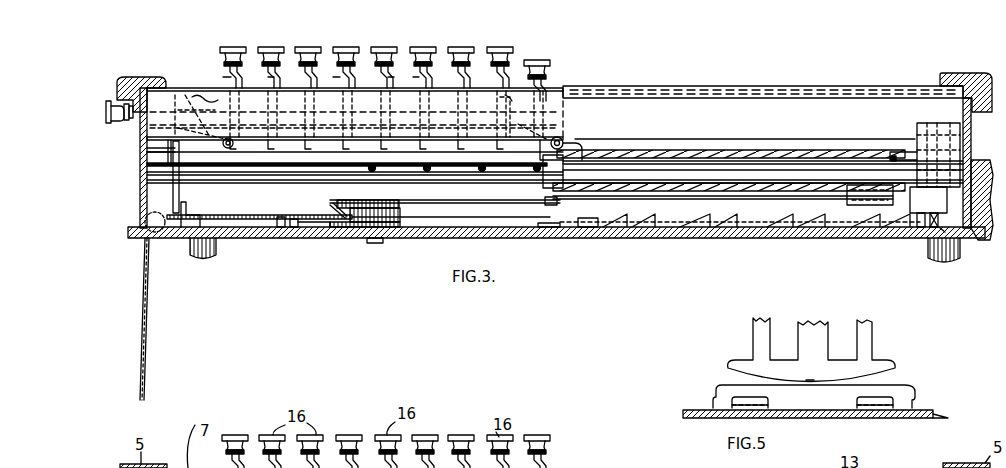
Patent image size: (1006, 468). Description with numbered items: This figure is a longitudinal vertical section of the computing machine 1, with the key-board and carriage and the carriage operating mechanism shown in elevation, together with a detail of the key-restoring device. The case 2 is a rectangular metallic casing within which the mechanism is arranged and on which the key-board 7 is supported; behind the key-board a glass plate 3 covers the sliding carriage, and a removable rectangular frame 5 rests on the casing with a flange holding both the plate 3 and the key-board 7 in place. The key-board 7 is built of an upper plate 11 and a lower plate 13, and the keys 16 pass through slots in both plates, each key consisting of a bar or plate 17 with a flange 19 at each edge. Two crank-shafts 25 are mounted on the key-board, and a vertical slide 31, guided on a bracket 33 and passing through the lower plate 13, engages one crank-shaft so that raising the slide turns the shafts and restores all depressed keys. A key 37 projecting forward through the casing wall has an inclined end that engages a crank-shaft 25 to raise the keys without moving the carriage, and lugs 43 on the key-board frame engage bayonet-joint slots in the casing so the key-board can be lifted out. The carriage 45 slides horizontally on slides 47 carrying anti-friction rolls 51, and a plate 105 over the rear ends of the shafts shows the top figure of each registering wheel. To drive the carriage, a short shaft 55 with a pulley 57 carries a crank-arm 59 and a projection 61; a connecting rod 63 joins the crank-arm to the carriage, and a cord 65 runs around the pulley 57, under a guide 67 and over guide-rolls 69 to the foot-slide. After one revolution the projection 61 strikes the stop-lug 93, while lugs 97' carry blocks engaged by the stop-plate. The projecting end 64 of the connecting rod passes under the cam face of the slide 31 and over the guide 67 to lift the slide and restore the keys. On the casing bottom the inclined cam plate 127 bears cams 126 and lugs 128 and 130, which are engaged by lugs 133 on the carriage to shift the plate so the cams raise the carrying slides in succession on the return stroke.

In FIG. 3, the machine 1 is at (990, 190).
In FIG. 5, the case 2 is at (843, 412).
In FIG. 3, the glass plate 3 is at (748, 90).
In FIG. 3, the removable rectangular frame 5 is at (131, 76).
In FIG. 3, the key-board 7 is at (193, 88).
In FIG. 3, the upper plate 11 is at (517, 98).
In FIG. 3, the lower plate 13 is at (403, 140).
In FIG. 3, the keys 16 is at (272, 46).
In FIG. 3, the bar or plate 17 is at (272, 77).
In FIG. 3, the flange 19 is at (403, 77).
In FIG. 3, the crank-shafts 25 is at (223, 143).
In FIG. 3, the vertical slide 31 is at (180, 194).
In FIG. 5, the vertical slide 31 is at (758, 342).
In FIG. 3, the bracket 33 is at (170, 152).
In FIG. 3, the key 37 is at (106, 113).
In FIG. 3, the lugs or projections 43 is at (200, 99).
In FIG. 3, the carriage 45 is at (712, 165).
In FIG. 3, the horizontal slides 47 is at (335, 166).
In FIG. 3, the anti-friction rolls 51 is at (427, 172).
In FIG. 3, the short shaft 55 is at (376, 243).
In FIG. 3, the pulley or drum 57 is at (360, 226).
In FIG. 3, the crank-arm 59 is at (512, 205).
In FIG. 3, the projection 61 is at (330, 207).
In FIG. 3, the connecting rod 63 is at (700, 200).
In FIG. 3, the projecting end 64 is at (540, 201).
In FIG. 5, the projecting end 64 is at (810, 380).
In FIG. 3, the cord 65 is at (248, 216).
In FIG. 3, the guide 67 is at (187, 208).
In FIG. 5, the guide 67 is at (897, 390).
In FIG. 3, the guide-rolls 69 is at (158, 240).
In FIG. 3, the stop-lug 93 is at (296, 230).
In FIG. 3, the lugs 97' is at (268, 243).
In FIG. 3, the plate 105 is at (905, 150).
In FIG. 3, the cams 126 is at (700, 226).
In FIG. 3, the inclined cam plate 127 is at (732, 224).
In FIG. 3, the inclined lug 128 is at (588, 229).
In FIG. 3, the inclined lug 130 is at (918, 220).
In FIG. 3, the inclined lugs 133 is at (945, 230).